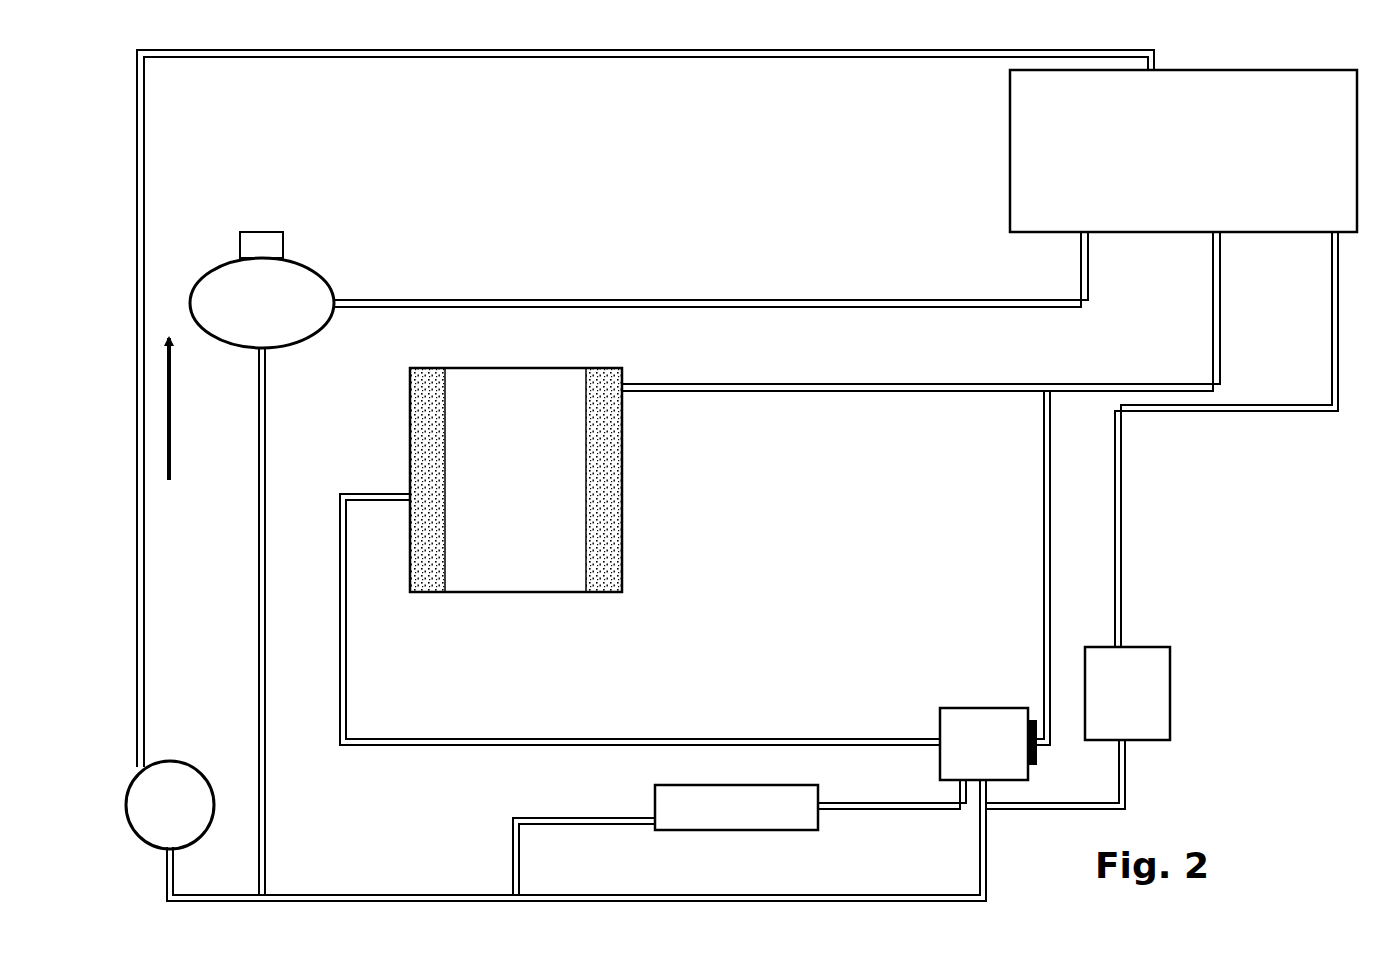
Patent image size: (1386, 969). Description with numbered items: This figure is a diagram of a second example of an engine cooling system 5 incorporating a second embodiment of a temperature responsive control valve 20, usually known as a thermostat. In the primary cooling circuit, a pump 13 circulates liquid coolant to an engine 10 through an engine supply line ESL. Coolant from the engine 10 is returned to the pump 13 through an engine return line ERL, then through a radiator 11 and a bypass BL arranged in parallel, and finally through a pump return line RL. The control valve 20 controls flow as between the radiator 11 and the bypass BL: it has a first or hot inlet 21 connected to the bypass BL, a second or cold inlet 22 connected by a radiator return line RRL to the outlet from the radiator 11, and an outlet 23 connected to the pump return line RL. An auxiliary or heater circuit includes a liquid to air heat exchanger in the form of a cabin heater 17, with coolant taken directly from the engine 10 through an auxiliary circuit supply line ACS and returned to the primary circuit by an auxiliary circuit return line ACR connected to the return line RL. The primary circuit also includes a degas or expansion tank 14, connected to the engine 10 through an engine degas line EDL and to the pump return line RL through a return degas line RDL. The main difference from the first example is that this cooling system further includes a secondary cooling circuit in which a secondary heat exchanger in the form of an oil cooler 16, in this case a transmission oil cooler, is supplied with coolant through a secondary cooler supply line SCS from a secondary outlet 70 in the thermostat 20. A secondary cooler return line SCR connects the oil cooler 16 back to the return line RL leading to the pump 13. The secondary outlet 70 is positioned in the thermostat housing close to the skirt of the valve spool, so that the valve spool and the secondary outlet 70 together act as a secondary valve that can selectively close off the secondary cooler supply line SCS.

The engine cooling system 5 is at (1210, 585).
The engine 10 is at (1183, 151).
The radiator 11 is at (516, 480).
The pump 13 is at (170, 805).
The degas or expansion tank 14 is at (262, 290).
The oil cooler 16 is at (736, 807).
The cabin heater 17 is at (1127, 693).
The temperature responsive control valve 20 is at (973, 735).
The first or hot inlet 21 is at (1040, 745).
The second or cold inlet 22 is at (940, 740).
The outlet 23 is at (990, 785).
The secondary outlet 70 is at (958, 782).
The engine supply line ESL is at (333, 58).
The engine degas line EDL is at (477, 300).
The engine return line ERL is at (813, 383).
The auxiliary circuit supply line ACS is at (1310, 411).
The auxiliary circuit return line ACR is at (1140, 800).
The bypass BL is at (1043, 442).
The radiator return line RRL is at (383, 745).
The return degas line RDL is at (259, 527).
The pump return line RL is at (812, 893).
The secondary cooler return line SCR is at (560, 822).
The secondary cooler supply line SCS is at (875, 812).